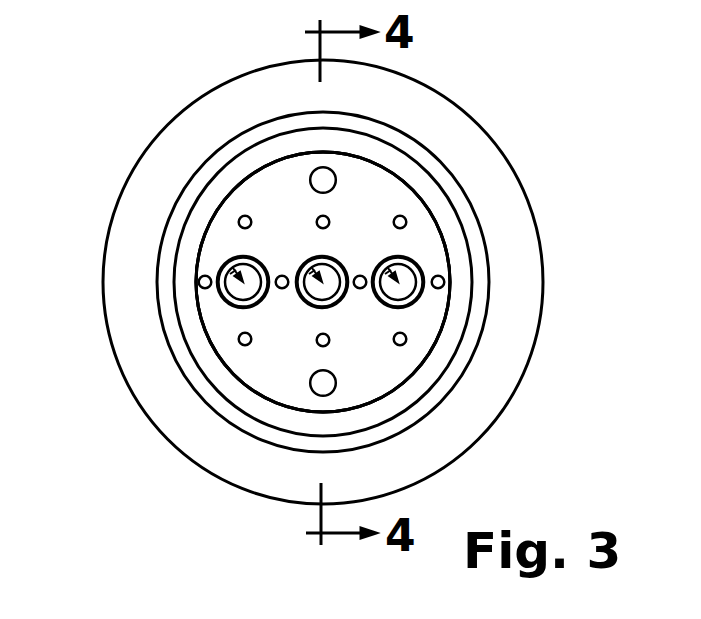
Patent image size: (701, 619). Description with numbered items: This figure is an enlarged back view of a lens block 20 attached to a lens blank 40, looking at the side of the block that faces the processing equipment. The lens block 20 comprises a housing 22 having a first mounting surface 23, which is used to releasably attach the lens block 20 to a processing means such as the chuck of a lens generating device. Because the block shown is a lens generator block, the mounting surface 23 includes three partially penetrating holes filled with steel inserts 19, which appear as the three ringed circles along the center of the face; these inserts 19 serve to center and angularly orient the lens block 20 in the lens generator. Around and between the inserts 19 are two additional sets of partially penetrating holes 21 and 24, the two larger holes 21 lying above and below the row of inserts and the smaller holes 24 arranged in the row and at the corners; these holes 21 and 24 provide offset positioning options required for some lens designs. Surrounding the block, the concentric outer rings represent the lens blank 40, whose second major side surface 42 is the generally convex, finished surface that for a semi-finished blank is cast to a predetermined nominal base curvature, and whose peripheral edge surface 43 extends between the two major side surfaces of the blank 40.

The steel inserts 19 is at (317, 272).
The lens block 20 is at (399, 366).
The partially penetrating holes 21 is at (316, 186).
The housing 22 is at (205, 251).
The first mounting surface 23 is at (217, 327).
The partially penetrating holes 24 is at (282, 273).
The lens blank 40 is at (168, 135).
The second major side surface 42 is at (527, 238).
The peripheral edge surface 43 is at (465, 453).